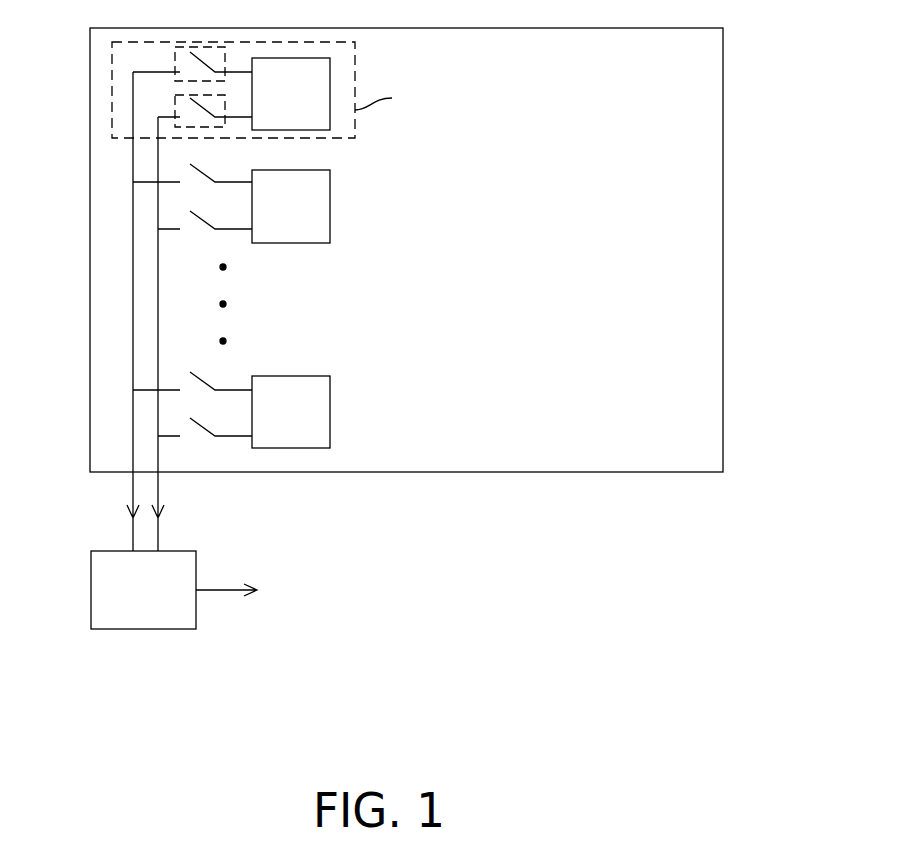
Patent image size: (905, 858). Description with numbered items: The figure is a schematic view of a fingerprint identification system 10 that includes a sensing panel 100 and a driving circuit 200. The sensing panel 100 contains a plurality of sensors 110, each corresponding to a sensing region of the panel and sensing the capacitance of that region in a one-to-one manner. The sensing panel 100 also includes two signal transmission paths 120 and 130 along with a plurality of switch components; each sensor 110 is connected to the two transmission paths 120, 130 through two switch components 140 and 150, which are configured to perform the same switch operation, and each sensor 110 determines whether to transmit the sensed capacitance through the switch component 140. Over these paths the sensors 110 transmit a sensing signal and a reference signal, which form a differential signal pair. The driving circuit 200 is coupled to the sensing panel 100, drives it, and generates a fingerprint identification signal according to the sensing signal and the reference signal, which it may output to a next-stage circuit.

The fingerprint identification system 10 is at (750, 627).
The sensing panel 100 is at (723, 313).
The sensor 110 is at (331, 83).
The signal transmission path 120 is at (133, 294).
The signal transmission path 130 is at (158, 292).
The switch component 140 is at (175, 55).
The switch component 150 is at (175, 107).
The driving circuit 200 is at (143, 629).